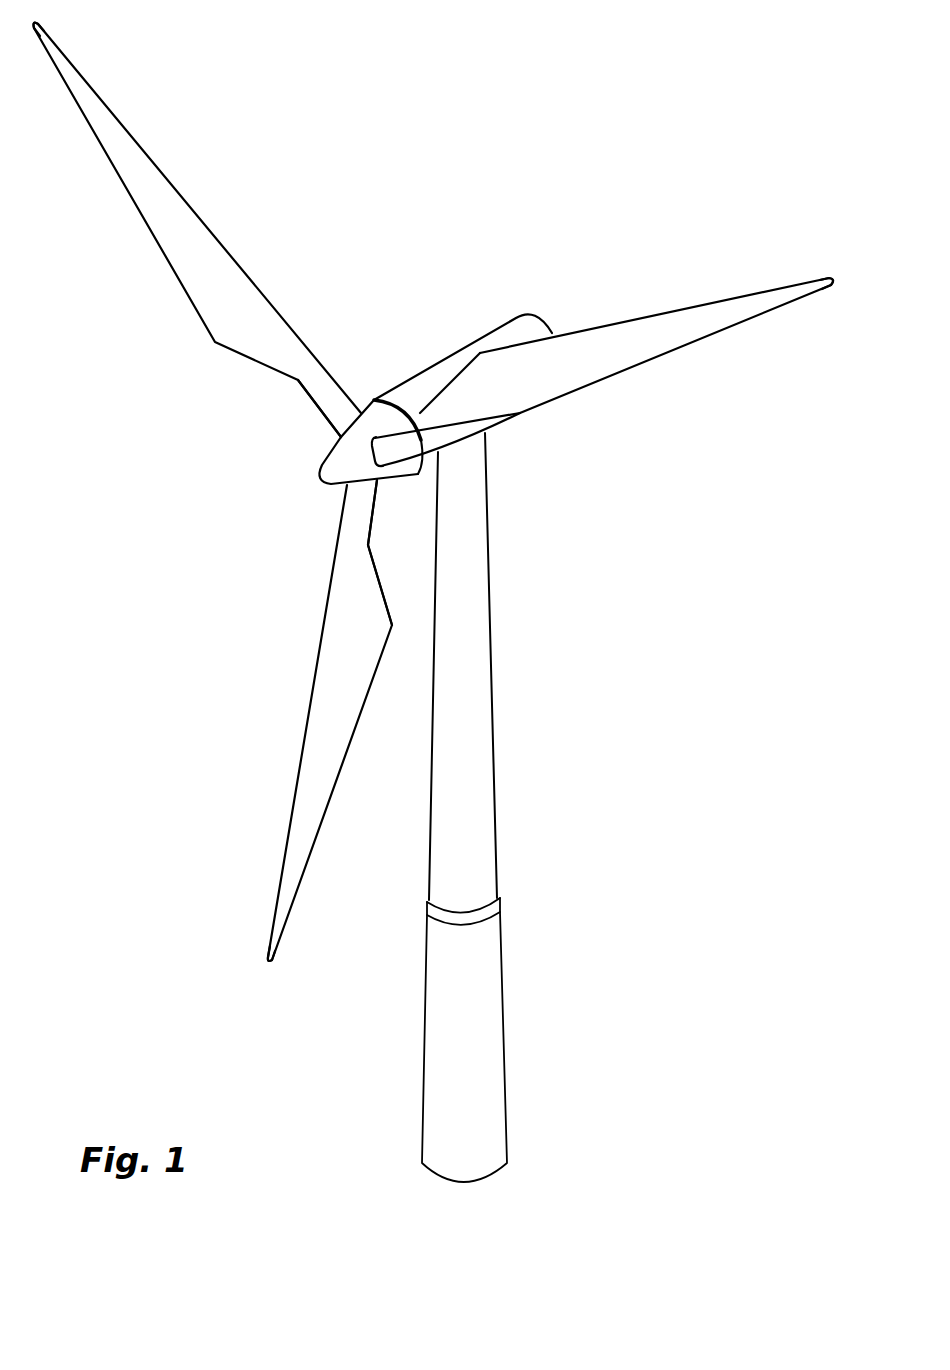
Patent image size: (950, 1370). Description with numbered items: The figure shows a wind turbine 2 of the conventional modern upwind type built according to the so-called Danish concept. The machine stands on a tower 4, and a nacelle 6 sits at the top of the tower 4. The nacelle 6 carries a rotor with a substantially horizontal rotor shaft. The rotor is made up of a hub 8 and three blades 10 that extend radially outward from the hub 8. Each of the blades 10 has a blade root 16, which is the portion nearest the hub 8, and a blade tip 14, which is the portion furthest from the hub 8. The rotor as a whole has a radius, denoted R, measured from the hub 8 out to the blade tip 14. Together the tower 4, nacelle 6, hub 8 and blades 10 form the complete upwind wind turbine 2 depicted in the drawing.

The wind turbine 2 is at (597, 746).
The tower 4 is at (483, 670).
The nacelle 6 is at (423, 378).
The hub 8 is at (337, 460).
The blades 10 is at (227, 313).
The blade tip 14 is at (74, 78).
The blade root 16 is at (346, 414).